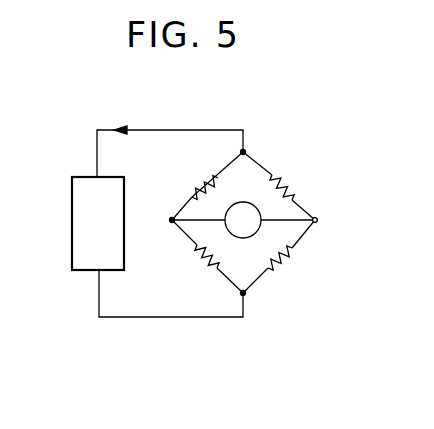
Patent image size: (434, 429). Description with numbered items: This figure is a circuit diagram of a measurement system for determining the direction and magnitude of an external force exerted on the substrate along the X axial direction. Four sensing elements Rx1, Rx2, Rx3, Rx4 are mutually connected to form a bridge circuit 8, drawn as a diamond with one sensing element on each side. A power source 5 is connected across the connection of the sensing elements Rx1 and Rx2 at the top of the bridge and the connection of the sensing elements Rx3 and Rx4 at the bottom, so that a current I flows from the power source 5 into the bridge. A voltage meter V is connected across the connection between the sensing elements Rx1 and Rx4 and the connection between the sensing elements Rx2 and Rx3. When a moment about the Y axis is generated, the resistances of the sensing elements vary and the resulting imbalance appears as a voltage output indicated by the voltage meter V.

The power source 5 is at (124, 205).
The bridge circuit 8 is at (244, 204).
The current I is at (120, 141).
The sensing element Rx1 is at (207, 186).
The sensing element Rx2 is at (279, 186).
The sensing element Rx3 is at (279, 256).
The sensing element Rx4 is at (207, 256).